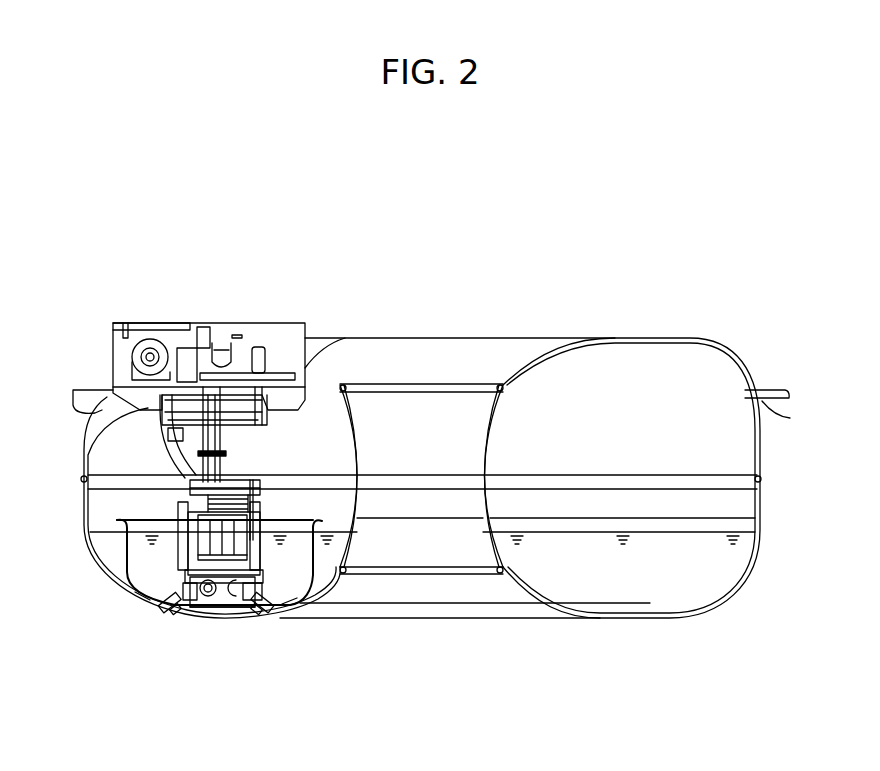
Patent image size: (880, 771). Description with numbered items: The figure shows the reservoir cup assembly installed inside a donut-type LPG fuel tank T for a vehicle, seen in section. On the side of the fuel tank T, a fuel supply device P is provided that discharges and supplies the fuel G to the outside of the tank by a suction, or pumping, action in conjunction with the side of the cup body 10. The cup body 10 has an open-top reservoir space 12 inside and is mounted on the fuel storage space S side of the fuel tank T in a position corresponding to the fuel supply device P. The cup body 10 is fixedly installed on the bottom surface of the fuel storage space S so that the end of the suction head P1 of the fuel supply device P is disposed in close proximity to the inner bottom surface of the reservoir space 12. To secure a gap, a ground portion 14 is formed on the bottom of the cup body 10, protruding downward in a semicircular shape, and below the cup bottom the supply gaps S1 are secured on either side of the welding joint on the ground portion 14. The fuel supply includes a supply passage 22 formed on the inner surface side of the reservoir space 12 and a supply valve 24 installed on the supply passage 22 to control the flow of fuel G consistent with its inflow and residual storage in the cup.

The fuel tank T is at (664, 322).
The fuel storage space S is at (562, 378).
The fuel G is at (705, 532).
The fuel supply device P is at (155, 460).
The suction head P1 is at (207, 580).
The cup body 10 is at (118, 548).
The reservoir space 12 is at (153, 566).
The ground portion 14 is at (217, 617).
The supply passage 22 is at (177, 608).
The supply valve 24 is at (177, 618).
The supply gap S1 is at (140, 596).